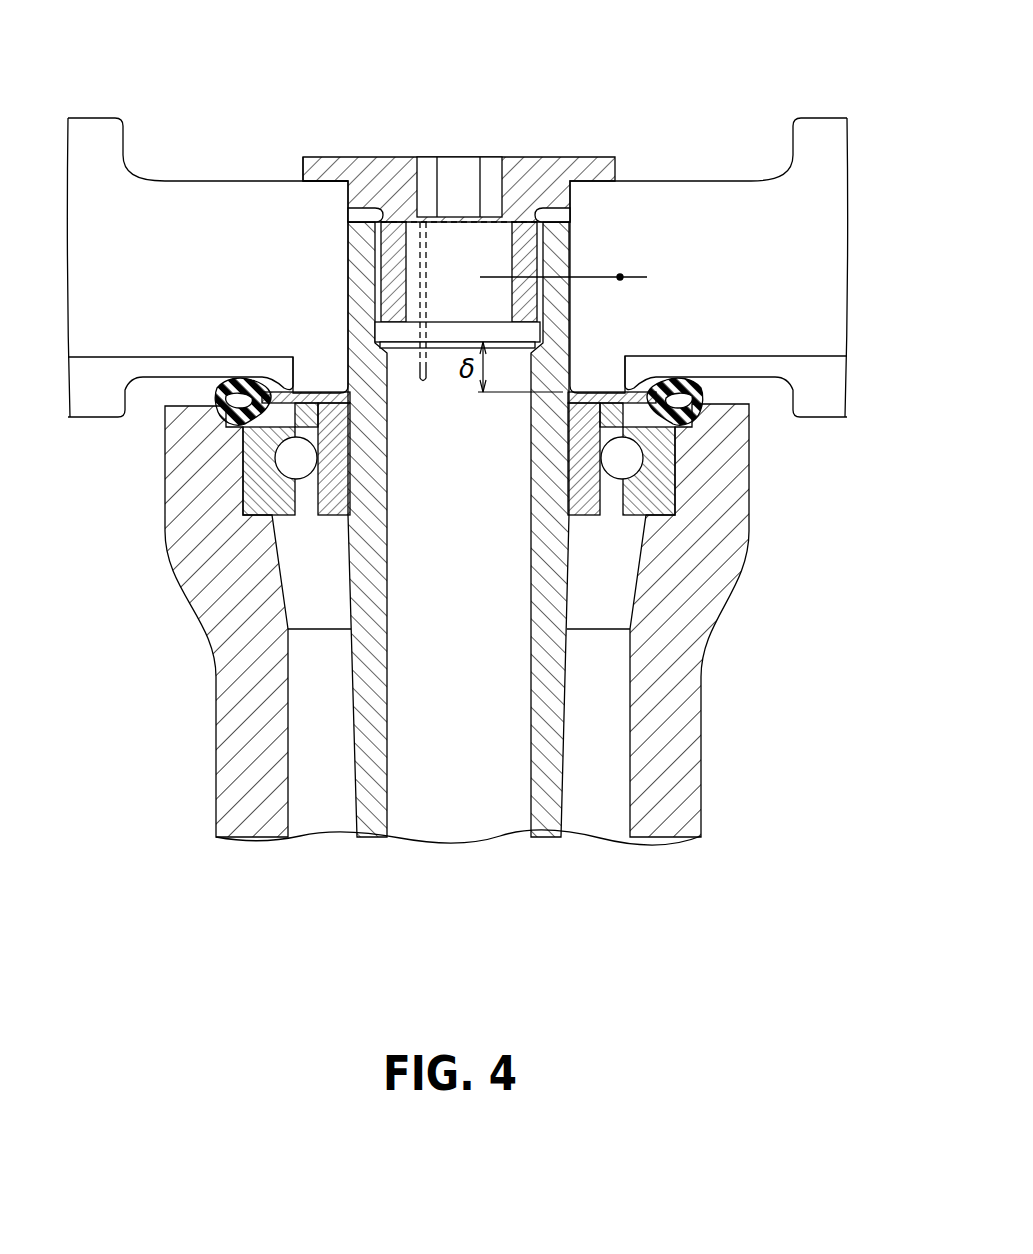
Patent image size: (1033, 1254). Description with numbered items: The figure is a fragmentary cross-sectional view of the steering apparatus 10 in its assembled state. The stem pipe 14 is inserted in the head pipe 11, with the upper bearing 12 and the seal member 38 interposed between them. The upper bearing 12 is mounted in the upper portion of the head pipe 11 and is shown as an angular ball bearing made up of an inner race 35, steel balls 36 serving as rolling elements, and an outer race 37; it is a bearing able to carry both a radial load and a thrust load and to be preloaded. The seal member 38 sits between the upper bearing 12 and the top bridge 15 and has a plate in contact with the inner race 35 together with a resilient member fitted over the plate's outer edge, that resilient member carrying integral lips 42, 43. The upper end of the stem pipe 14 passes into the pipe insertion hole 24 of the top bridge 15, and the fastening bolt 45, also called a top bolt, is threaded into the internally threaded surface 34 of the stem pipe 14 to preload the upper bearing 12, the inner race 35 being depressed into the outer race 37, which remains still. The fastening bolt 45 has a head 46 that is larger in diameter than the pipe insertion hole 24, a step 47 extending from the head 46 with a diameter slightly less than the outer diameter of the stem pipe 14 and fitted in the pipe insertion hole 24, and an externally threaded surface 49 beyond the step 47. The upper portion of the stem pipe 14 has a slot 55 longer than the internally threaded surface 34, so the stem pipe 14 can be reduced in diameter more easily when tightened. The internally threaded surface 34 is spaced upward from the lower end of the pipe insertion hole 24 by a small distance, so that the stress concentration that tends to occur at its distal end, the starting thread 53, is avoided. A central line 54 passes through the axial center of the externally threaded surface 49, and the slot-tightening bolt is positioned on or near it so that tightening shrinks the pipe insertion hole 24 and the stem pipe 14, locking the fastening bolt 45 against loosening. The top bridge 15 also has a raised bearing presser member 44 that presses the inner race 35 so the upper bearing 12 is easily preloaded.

The steering apparatus 10 is at (617, 82).
The head pipe 11 is at (733, 583).
The upper bearing 12 is at (546, 558).
The stem pipe 14 is at (563, 763).
The top bridge 15 is at (709, 241).
The pipe insertion hole 24 is at (552, 210).
The internally threaded surface 34 is at (537, 250).
The inner race 35 is at (587, 516).
The steel balls 36 is at (617, 516).
The outer race 37 is at (638, 516).
The seal member 38 is at (724, 397).
The lip 42 is at (213, 395).
The lip 43 is at (165, 478).
The bearing presser member 44 is at (603, 372).
The fastening bolt 45 is at (623, 140).
The head 46 is at (303, 170).
The step 47 is at (347, 188).
The externally threaded surface 49 is at (352, 280).
The starting thread 53 is at (537, 338).
The central line 54 is at (622, 275).
The slot 55 is at (425, 381).